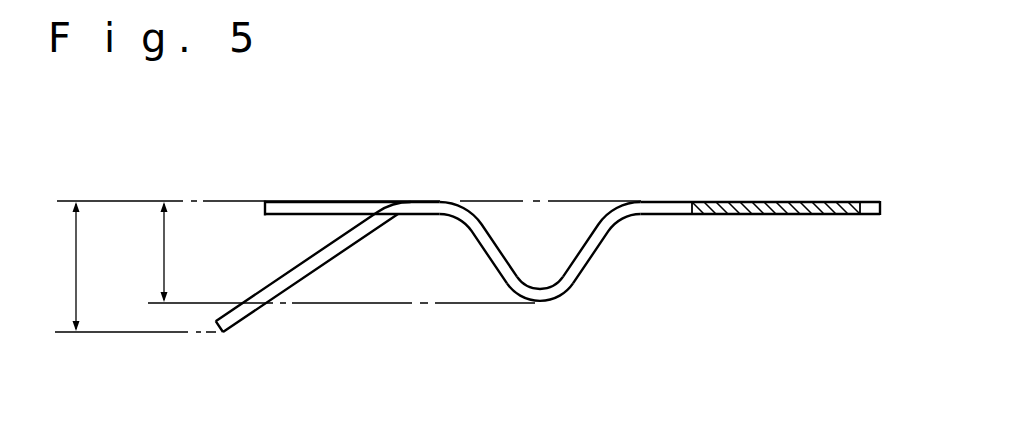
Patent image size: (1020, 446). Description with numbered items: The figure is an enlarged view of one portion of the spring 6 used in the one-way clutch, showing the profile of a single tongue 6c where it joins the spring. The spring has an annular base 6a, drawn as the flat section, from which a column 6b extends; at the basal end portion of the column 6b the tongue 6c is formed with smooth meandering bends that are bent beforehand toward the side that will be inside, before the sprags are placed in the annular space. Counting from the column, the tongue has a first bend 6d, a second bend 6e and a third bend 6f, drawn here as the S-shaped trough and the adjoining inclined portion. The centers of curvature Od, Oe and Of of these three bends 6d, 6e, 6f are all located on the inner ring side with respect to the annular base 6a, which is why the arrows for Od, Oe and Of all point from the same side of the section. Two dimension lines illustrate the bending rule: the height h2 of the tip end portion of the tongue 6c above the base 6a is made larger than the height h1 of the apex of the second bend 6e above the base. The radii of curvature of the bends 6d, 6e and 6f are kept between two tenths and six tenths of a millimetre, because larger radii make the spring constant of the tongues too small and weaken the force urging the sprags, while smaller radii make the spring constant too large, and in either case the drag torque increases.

The spring 6 is at (548, 256).
The annular base 6a is at (338, 210).
The column 6b is at (783, 217).
The tongue 6c is at (322, 252).
The first bend 6d is at (632, 214).
The second bend 6e is at (544, 282).
The third bend 6f is at (430, 214).
The center of curvature of the second bend Oe is at (521, 281).
The center of curvature of the third bend Of is at (475, 236).
The center of curvature of the first bend Od is at (605, 236).
The height of the apex of the second bend h1 is at (185, 252).
The height of the tip end portion of the tongue h2 is at (98, 266).